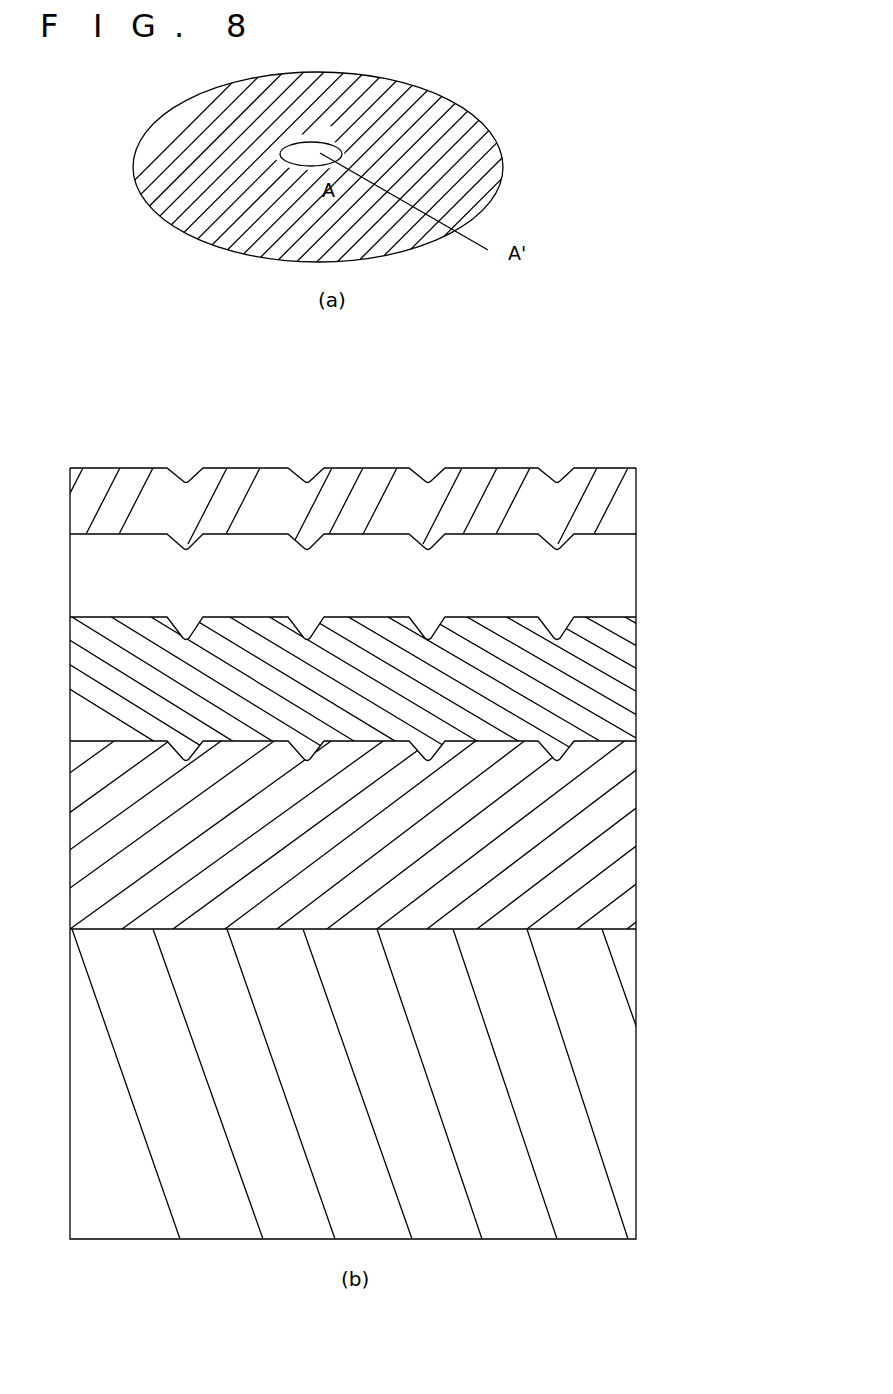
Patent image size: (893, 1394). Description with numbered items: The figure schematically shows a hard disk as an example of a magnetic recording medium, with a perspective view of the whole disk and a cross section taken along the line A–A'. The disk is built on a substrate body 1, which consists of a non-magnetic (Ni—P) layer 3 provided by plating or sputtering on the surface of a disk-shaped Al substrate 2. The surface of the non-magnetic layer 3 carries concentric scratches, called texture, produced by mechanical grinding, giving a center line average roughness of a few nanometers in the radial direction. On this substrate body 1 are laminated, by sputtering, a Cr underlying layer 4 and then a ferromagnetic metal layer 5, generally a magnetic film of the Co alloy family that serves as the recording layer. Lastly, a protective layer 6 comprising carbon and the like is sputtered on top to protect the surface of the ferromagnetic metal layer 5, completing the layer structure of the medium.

The substrate body 1 is at (446, 970).
The Al substrate 2 is at (410, 1084).
The non-magnetic (Ni—P) layer 3 is at (635, 812).
The Cr underlying layer 4 is at (633, 684).
The ferromagnetic metal layer 5 is at (636, 588).
The protective layer 6 is at (642, 515).